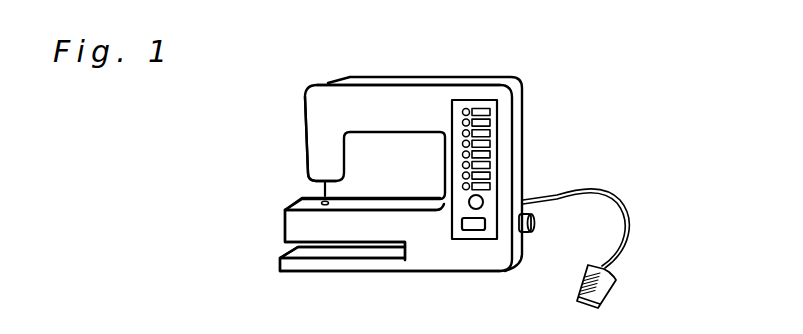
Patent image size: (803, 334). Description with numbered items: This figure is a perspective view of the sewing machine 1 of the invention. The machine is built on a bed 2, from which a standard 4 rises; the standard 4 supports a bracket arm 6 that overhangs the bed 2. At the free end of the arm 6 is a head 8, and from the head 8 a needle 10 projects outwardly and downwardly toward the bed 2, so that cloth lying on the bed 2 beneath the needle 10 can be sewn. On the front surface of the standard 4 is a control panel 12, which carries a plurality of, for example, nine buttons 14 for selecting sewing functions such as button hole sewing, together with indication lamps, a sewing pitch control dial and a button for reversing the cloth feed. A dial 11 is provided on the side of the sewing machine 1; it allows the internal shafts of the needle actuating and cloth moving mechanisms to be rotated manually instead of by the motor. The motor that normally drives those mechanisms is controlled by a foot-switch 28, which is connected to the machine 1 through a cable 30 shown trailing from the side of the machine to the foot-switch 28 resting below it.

The sewing machine 1 is at (333, 69).
The bed 2 is at (362, 233).
The standard 4 is at (528, 123).
The bracket arm 6 is at (397, 93).
The head 8 is at (310, 141).
The needle 10 is at (322, 186).
The dial 11 is at (535, 223).
The control panel 12 is at (499, 117).
The buttons 14 is at (480, 108).
The foot-switch 28 is at (616, 280).
The cable 30 is at (617, 192).